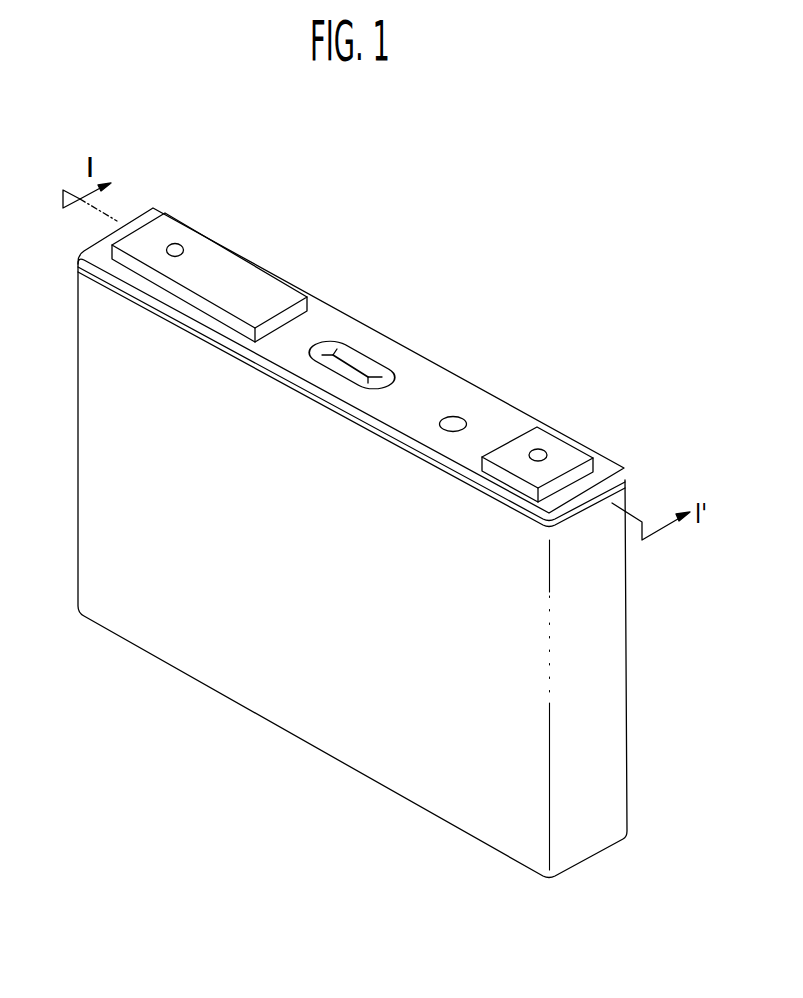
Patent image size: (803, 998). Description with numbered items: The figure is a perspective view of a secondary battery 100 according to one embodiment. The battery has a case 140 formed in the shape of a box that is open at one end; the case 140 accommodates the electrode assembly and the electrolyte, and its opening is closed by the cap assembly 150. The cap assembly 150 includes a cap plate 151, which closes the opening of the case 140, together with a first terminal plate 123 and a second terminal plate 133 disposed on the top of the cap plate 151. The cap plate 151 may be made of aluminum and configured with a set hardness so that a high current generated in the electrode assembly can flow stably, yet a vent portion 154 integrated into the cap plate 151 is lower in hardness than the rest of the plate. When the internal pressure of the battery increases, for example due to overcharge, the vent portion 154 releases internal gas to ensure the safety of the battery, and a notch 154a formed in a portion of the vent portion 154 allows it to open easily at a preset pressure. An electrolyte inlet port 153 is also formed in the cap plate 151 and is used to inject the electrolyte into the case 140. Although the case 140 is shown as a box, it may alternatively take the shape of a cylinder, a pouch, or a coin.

The secondary battery 100 is at (545, 232).
The first terminal plate 123 is at (540, 440).
The second terminal plate 133 is at (200, 250).
The case 140 is at (257, 702).
The cap assembly 150 is at (440, 265).
The cap plate 151 is at (610, 473).
The electrolyte inlet port 153 is at (455, 423).
The vent portion 154 is at (349, 343).
The notch 154a is at (363, 367).